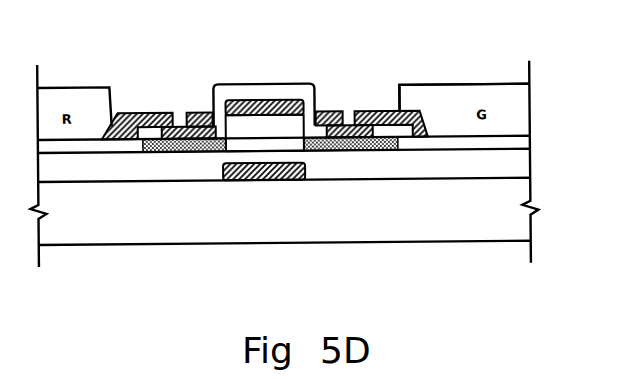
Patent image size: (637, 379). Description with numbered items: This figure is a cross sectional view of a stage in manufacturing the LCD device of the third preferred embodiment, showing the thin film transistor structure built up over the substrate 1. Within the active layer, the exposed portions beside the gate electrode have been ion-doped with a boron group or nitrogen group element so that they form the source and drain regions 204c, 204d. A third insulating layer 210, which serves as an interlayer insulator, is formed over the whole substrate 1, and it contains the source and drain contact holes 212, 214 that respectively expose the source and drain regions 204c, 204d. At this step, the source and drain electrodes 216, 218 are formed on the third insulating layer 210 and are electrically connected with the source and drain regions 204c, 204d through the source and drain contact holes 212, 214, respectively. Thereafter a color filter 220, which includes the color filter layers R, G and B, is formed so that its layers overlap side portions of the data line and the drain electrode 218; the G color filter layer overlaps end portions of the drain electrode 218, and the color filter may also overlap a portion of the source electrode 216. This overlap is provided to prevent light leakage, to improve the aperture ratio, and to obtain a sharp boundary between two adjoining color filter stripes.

The substrate 1 is at (284, 211).
The source region 204c is at (165, 142).
The drain region 204d is at (362, 142).
The third insulating layer 210 is at (263, 88).
The source contact hole 212 is at (181, 112).
The drain contact hole 214 is at (349, 112).
The source electrode 216 is at (143, 114).
The drain electrode 218 is at (388, 115).
The color filter 220 is at (456, 92).